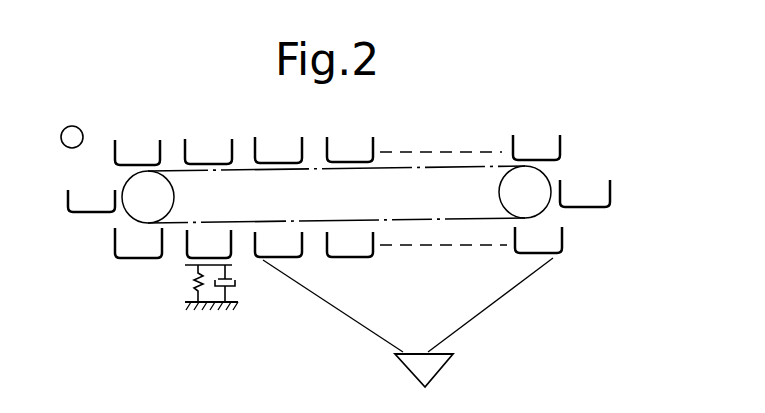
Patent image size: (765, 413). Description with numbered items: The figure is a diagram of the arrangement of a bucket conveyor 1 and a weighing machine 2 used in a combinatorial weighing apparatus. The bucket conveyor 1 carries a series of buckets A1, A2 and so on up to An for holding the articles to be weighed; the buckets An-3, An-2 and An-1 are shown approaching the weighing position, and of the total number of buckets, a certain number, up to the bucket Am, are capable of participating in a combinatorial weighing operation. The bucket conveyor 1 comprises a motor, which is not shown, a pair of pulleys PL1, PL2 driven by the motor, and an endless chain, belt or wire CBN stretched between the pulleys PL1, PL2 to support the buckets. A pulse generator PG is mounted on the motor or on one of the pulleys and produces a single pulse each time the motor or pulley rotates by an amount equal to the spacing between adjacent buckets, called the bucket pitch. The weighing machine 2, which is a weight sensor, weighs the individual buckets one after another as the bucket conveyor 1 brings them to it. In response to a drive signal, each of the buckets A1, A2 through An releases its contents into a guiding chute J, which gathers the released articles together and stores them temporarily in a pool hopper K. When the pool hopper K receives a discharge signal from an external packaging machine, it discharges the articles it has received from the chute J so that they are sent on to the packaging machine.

The bucket conveyor 1 is at (350, 172).
The weighing machine 2 is at (182, 281).
The pulse generator PG is at (133, 190).
The first pulley PL1 is at (123, 218).
The second pulley PL2 is at (548, 203).
The endless chain, belt or wire CBN is at (453, 168).
The bucket An-3 is at (137, 144).
The bucket An-2 is at (91, 192).
The bucket An-1 is at (138, 242).
The bucket An is at (209, 242).
The bucket A1 is at (278, 240).
The bucket A2 is at (350, 241).
The bucket Am is at (538, 238).
The guiding chute J is at (483, 312).
The pool hopper K is at (437, 372).